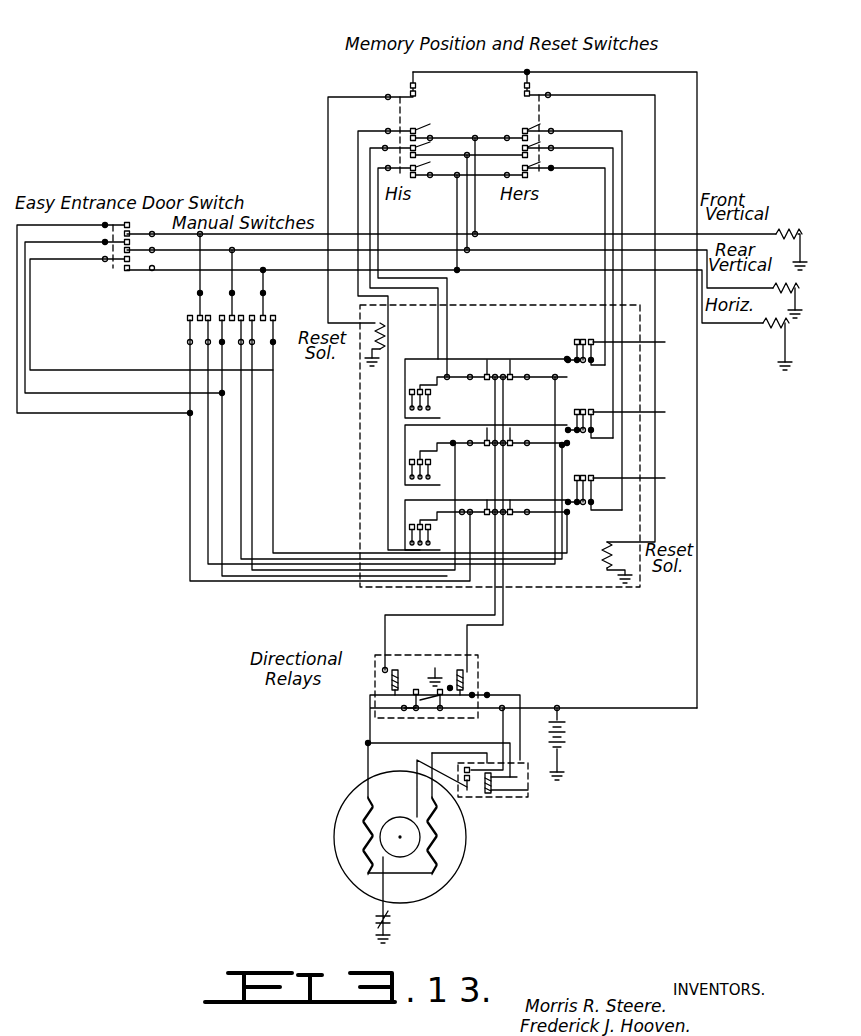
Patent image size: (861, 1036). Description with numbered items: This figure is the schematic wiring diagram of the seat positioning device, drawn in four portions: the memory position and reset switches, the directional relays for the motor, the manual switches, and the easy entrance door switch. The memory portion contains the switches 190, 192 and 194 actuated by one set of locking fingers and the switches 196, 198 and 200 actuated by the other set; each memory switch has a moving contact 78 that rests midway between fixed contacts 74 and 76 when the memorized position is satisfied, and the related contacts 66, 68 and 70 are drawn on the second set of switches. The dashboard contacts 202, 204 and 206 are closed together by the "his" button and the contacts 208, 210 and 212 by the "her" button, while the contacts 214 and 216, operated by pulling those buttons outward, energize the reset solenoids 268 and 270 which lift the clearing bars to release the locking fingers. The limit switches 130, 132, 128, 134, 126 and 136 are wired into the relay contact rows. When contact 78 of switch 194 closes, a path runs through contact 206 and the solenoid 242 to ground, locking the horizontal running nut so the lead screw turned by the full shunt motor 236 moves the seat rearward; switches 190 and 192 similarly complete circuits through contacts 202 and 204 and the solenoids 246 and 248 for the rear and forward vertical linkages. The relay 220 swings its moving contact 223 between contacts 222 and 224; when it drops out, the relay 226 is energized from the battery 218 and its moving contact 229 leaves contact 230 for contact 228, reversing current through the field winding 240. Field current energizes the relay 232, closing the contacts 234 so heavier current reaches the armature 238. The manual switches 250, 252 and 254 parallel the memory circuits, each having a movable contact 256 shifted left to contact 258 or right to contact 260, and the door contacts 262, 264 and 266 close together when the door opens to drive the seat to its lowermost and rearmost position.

The contact 214 is at (410, 92).
The contact 216 is at (523, 90).
The contact 202 is at (425, 128).
The contact 204 is at (430, 152).
The contact 206 is at (430, 172).
The contact 208 is at (522, 128).
The contact 210 is at (522, 148).
The contact 212 is at (522, 168).
The solenoid 248 is at (780, 234).
The solenoid 246 is at (775, 288).
The solenoid 242 is at (765, 323).
The contact 262 is at (170, 228).
The contact 264 is at (140, 250).
The contact 266 is at (140, 268).
The manual switch 250 is at (209, 276).
The manual switch 252 is at (242, 284).
The manual switch 254 is at (275, 294).
The movable contact 256 is at (200, 322).
The contact 258 is at (187, 318).
The contact 260 is at (200, 328).
The reset solenoid 268 is at (385, 340).
The reset solenoid 270 is at (603, 555).
The switch 194 is at (487, 388).
The switch 192 is at (487, 455).
The switch 190 is at (486, 525).
The contact 74 is at (410, 392).
The contact 76 is at (432, 396).
The contact 78 is at (412, 402).
The limit switch 130 is at (486, 372).
The limit switch 132 is at (510, 372).
The limit switch 128 is at (486, 438).
The limit switch 134 is at (510, 438).
The limit switch 126 is at (486, 507).
The limit switch 136 is at (510, 507).
The switch 196 is at (616, 337).
The switch 198 is at (616, 411).
The switch 200 is at (616, 483).
The relay contact 66 is at (577, 339).
The relay contact 68 is at (583, 339).
The relay contact 70 is at (593, 342).
The relay 220 is at (390, 680).
The relay 226 is at (466, 680).
The contact 222 is at (416, 688).
The contact 224 is at (436, 696).
The moving contact 223 is at (413, 690).
The contact 228 is at (450, 656).
The moving contact 229 is at (452, 686).
The contact 230 is at (440, 708).
The battery 218 is at (567, 748).
The relay 232 is at (522, 792).
The contacts 234 is at (470, 782).
The full shunt motor 236 is at (462, 880).
The armature 238 is at (390, 818).
The field winding 240 is at (368, 858).